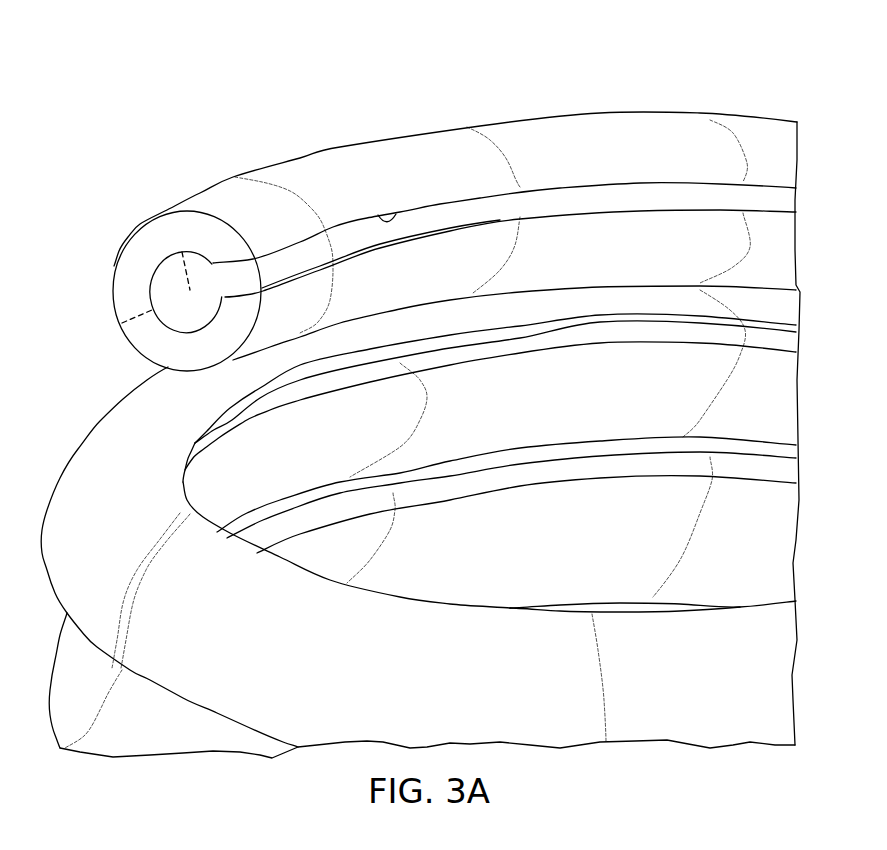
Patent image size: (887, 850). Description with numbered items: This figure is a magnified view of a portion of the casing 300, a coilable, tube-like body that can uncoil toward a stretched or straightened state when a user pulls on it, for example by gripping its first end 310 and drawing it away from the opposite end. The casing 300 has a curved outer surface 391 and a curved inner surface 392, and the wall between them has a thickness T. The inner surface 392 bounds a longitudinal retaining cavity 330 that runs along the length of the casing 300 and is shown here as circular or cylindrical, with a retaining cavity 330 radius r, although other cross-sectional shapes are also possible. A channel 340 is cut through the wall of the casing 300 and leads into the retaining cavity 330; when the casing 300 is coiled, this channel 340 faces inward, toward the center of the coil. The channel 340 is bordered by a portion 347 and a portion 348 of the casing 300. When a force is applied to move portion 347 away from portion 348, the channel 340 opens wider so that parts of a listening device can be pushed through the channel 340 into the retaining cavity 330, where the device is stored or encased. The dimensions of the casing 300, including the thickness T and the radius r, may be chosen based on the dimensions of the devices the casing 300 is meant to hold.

The casing 300 is at (475, 91).
The first end 310 is at (200, 200).
The retaining cavity 330 is at (483, 200).
The channel 340 is at (413, 222).
The portion 347 is at (360, 221).
The portion 348 is at (331, 256).
The curved outer surface 391 is at (212, 220).
The curved inner surface 392 is at (190, 333).
The retaining cavity radius r is at (183, 273).
The thickness T is at (147, 310).